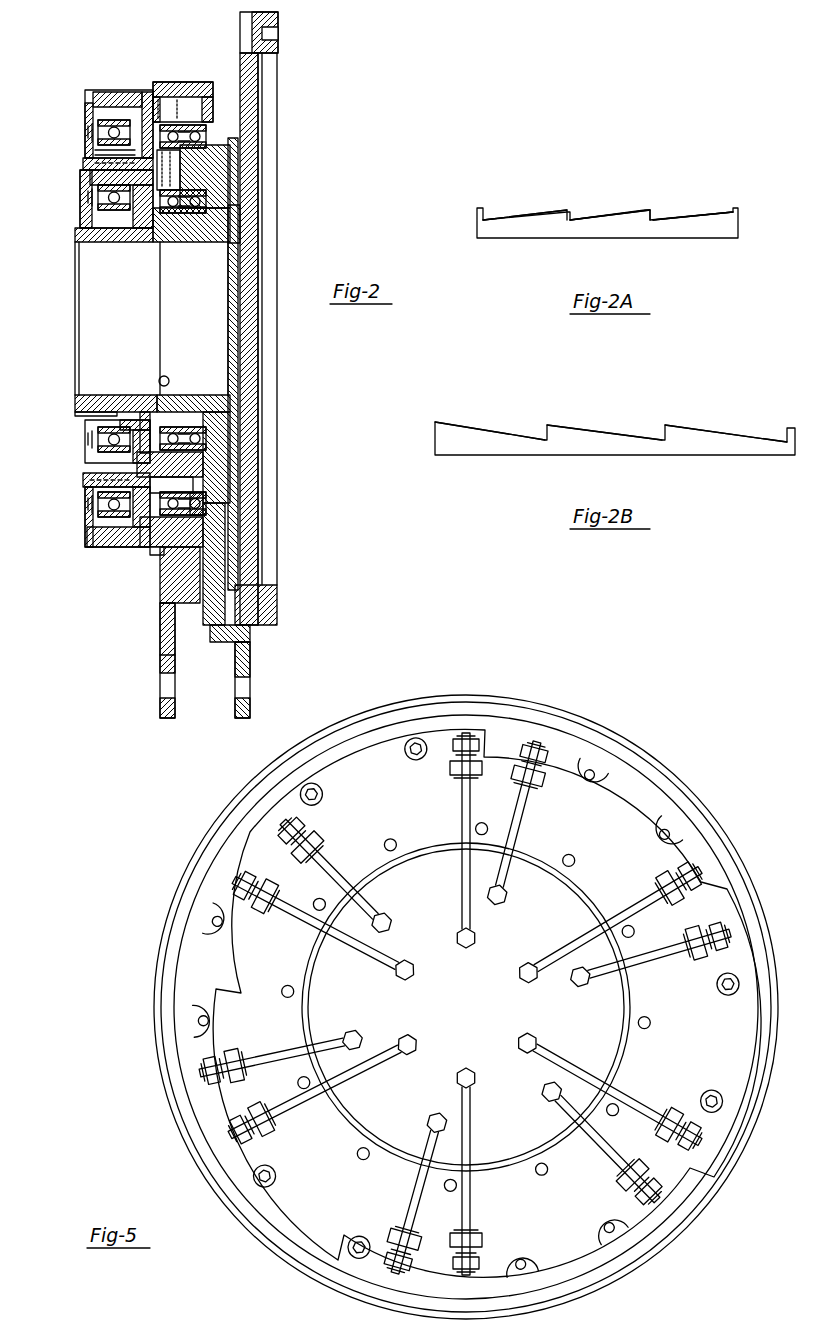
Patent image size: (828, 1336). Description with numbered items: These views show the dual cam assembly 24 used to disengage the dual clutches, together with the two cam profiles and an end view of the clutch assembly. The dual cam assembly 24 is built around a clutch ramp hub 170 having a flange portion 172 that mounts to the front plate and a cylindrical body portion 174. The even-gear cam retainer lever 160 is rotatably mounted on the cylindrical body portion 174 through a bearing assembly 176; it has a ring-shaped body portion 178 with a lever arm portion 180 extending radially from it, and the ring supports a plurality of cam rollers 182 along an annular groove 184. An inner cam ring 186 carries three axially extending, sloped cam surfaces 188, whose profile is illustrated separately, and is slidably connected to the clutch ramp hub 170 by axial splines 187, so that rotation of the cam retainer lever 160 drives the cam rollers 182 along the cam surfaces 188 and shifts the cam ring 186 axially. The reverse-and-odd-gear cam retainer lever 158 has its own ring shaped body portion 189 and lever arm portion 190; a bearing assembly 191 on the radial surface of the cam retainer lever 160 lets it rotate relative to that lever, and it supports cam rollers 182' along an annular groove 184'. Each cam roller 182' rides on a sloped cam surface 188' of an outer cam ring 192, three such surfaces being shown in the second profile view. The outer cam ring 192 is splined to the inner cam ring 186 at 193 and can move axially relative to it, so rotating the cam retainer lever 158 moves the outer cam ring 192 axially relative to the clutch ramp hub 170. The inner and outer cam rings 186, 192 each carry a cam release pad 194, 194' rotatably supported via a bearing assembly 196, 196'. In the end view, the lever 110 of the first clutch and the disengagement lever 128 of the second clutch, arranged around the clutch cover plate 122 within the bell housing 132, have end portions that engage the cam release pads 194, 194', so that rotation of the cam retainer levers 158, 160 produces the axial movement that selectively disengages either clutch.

In FIG. 2, the dual cam assembly 24 is at (283, 265).
In FIG. 5, the lever 110 is at (520, 828).
In FIG. 5, the clutch cover plate 122 is at (603, 822).
In FIG. 5, the disengagement lever 128 is at (465, 815).
In FIG. 5, the bell housing 132 is at (675, 792).
In FIG. 2, the R-1-3-5 cam retainer lever 158 is at (165, 627).
In FIG. 2, the 2-4-6 cam retainer lever 160 is at (252, 642).
In FIG. 2, the clutch ramp hub 170 is at (245, 228).
In FIG. 2, the flange portion 172 is at (250, 95).
In FIG. 2, the cylindrical body portion 174 is at (125, 235).
In FIG. 2, the bearing assembly 176 is at (193, 427).
In FIG. 2, the ring-shaped body portion 178 is at (200, 485).
In FIG. 2, the lever arm portion 180 is at (218, 557).
In FIG. 2, the cam rollers 182 is at (247, 143).
In FIG. 2, the cam rollers 182' is at (181, 61).
In FIG. 2, the annular groove 184 is at (244, 311).
In FIG. 2, the annular groove 184' is at (250, 274).
In FIG. 2, the cam ring 186 is at (100, 165).
In FIG. 2A, the cam ring 186 is at (620, 228).
In FIG. 2, the axial splines 187 is at (98, 410).
In FIG. 2, the cam surfaces 188 is at (81, 478).
In FIG. 2A, the cam surfaces 188 is at (616, 182).
In FIG. 2, the cam surfaces 188' is at (149, 577).
In FIG. 2B, the cam surfaces 188' is at (611, 400).
In FIG. 2, the ring shaped body portion 189 is at (155, 550).
In FIG. 2, the lever arm portion 190 is at (165, 652).
In FIG. 2, the bearing assembly 191 is at (198, 497).
In FIG. 2, the outer cam ring 192 is at (120, 95).
In FIG. 2B, the outer cam ring 192 is at (637, 445).
In FIG. 2, the spline connection 193 is at (100, 155).
In FIG. 2, the cam release pad 194 is at (81, 441).
In FIG. 2, the cam release pad 194' is at (77, 522).
In FIG. 2, the bearing assembly 196 is at (77, 199).
In FIG. 2, the bearing assembly 196' is at (75, 115).